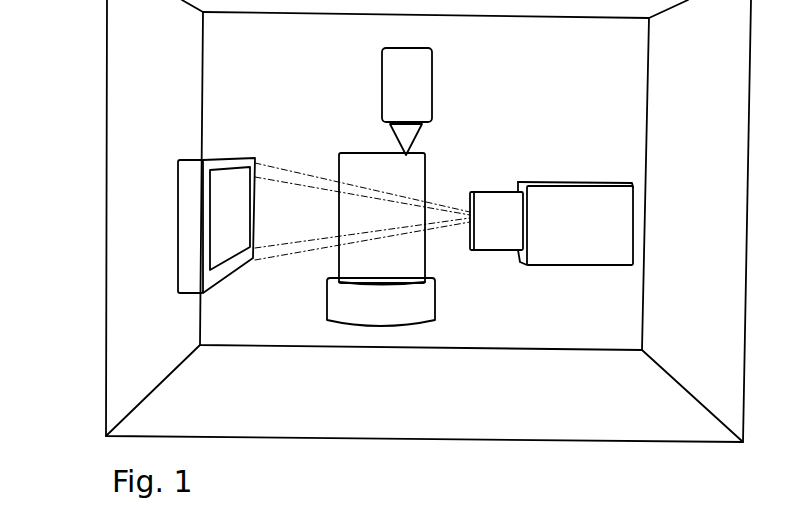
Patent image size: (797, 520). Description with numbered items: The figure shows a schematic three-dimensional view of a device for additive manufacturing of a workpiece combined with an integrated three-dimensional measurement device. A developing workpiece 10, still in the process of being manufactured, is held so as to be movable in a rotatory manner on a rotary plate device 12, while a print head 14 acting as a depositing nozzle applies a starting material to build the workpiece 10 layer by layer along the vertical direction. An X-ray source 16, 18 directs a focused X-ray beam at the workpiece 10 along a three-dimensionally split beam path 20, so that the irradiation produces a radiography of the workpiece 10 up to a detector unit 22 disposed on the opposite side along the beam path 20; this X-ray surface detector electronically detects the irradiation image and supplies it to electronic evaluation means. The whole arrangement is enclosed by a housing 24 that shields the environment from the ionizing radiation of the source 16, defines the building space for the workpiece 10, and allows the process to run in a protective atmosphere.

The workpiece 10 is at (398, 175).
The rotary plate device 12 is at (412, 315).
The print head 14 is at (410, 80).
The X-ray source 16 is at (583, 247).
The X-ray source 18 is at (502, 210).
The beam path 20 is at (288, 247).
The detector unit 22 is at (183, 245).
The housing 24 is at (475, 428).